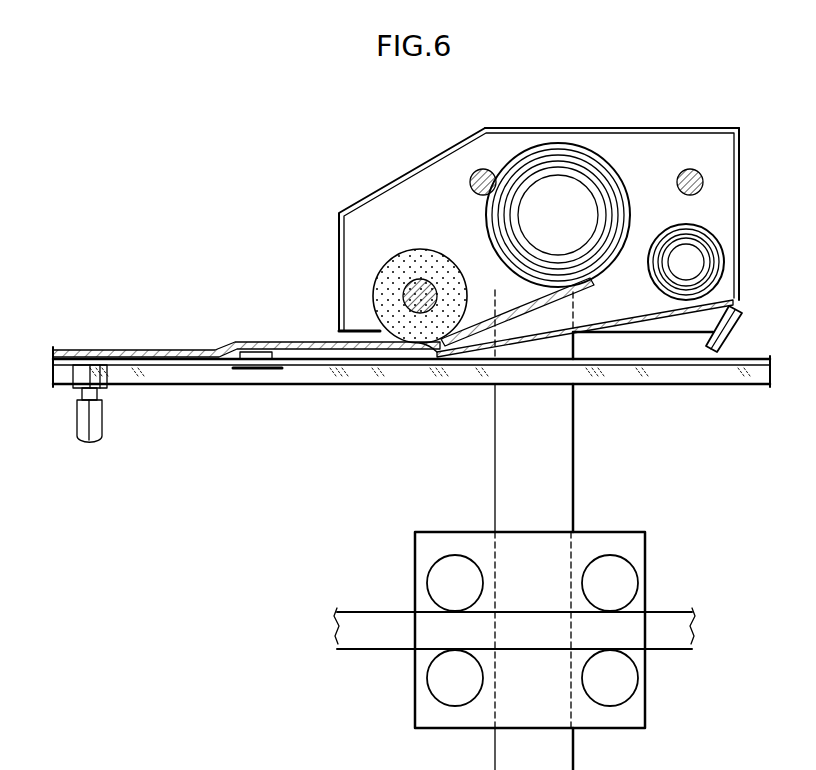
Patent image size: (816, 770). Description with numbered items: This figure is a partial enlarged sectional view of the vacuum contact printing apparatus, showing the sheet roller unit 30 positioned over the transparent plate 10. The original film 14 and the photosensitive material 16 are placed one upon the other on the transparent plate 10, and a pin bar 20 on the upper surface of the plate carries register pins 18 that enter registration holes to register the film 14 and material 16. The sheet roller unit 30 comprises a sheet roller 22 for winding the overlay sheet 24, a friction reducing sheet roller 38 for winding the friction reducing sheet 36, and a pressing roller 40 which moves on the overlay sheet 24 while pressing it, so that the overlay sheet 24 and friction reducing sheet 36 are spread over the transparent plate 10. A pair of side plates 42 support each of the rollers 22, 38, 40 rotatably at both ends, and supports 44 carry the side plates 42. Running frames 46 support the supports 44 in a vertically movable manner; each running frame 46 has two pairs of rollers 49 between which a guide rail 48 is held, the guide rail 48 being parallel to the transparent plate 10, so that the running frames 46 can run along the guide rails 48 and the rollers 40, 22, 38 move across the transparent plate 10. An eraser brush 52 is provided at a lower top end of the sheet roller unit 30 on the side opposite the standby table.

The transparent plate 10 is at (411, 394).
The original film 14 is at (596, 366).
The photosensitive material 16 is at (648, 354).
The register pins 18 is at (265, 340).
The pin bar 20 is at (272, 371).
The sheet roller 22 is at (588, 205).
The overlay sheet 24 is at (178, 350).
The sheet roller unit 30 is at (539, 213).
The friction reducing sheet 36 is at (628, 316).
The friction reducing sheet roller 38 is at (690, 243).
The pressing roller 40 is at (402, 252).
The side plates 42 is at (660, 140).
The supports 44 is at (574, 485).
The running frames 46 is at (453, 531).
The guide rails 48 is at (368, 650).
The rollers 49 is at (435, 578).
The eraser brush 52 is at (712, 346).